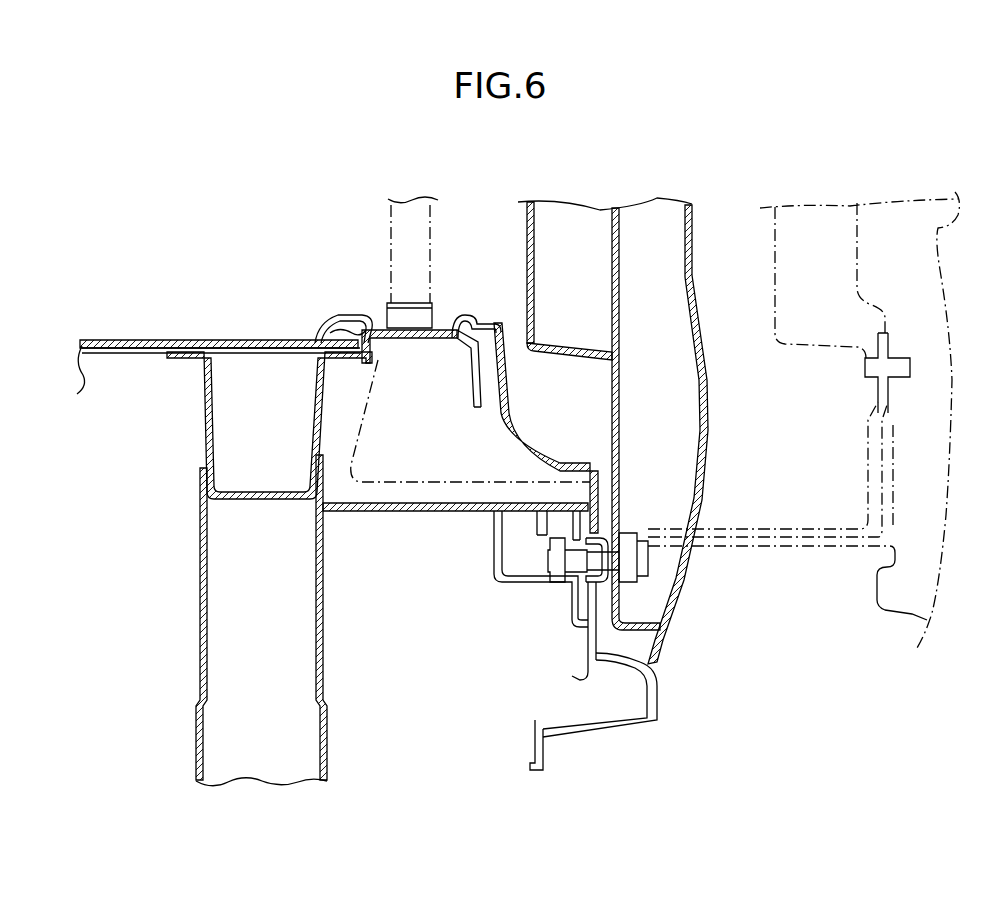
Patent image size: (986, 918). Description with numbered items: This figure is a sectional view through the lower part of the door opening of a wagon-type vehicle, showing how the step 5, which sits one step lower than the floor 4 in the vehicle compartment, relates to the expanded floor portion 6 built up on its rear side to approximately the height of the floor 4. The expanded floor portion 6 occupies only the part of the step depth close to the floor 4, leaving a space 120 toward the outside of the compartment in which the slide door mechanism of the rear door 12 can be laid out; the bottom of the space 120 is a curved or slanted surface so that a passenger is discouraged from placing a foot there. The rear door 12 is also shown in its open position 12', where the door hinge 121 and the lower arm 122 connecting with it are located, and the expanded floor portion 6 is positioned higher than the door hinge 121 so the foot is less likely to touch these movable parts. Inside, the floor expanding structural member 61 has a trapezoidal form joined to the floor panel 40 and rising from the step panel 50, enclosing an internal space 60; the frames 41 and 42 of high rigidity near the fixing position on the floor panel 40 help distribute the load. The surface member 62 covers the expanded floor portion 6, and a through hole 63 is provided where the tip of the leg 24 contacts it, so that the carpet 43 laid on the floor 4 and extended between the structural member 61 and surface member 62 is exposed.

The floor 4 is at (130, 312).
The floor panel 40 is at (122, 353).
The frame 41 is at (200, 563).
The frame 42 is at (205, 437).
The carpet 43 is at (258, 340).
The step 5 is at (432, 482).
The step panel 50 is at (400, 512).
The expanded floor portion 6 is at (464, 312).
The internal space 60 is at (421, 444).
The floor expanding structural member 61 is at (409, 339).
The surface member 62 is at (355, 314).
The through hole 63 is at (440, 313).
The leg 24 is at (440, 243).
The rear door 12 is at (627, 395).
The rear door in open state 12' is at (859, 380).
The space 120 is at (575, 404).
The door hinge 121 is at (632, 590).
The lower arm 122 is at (785, 545).